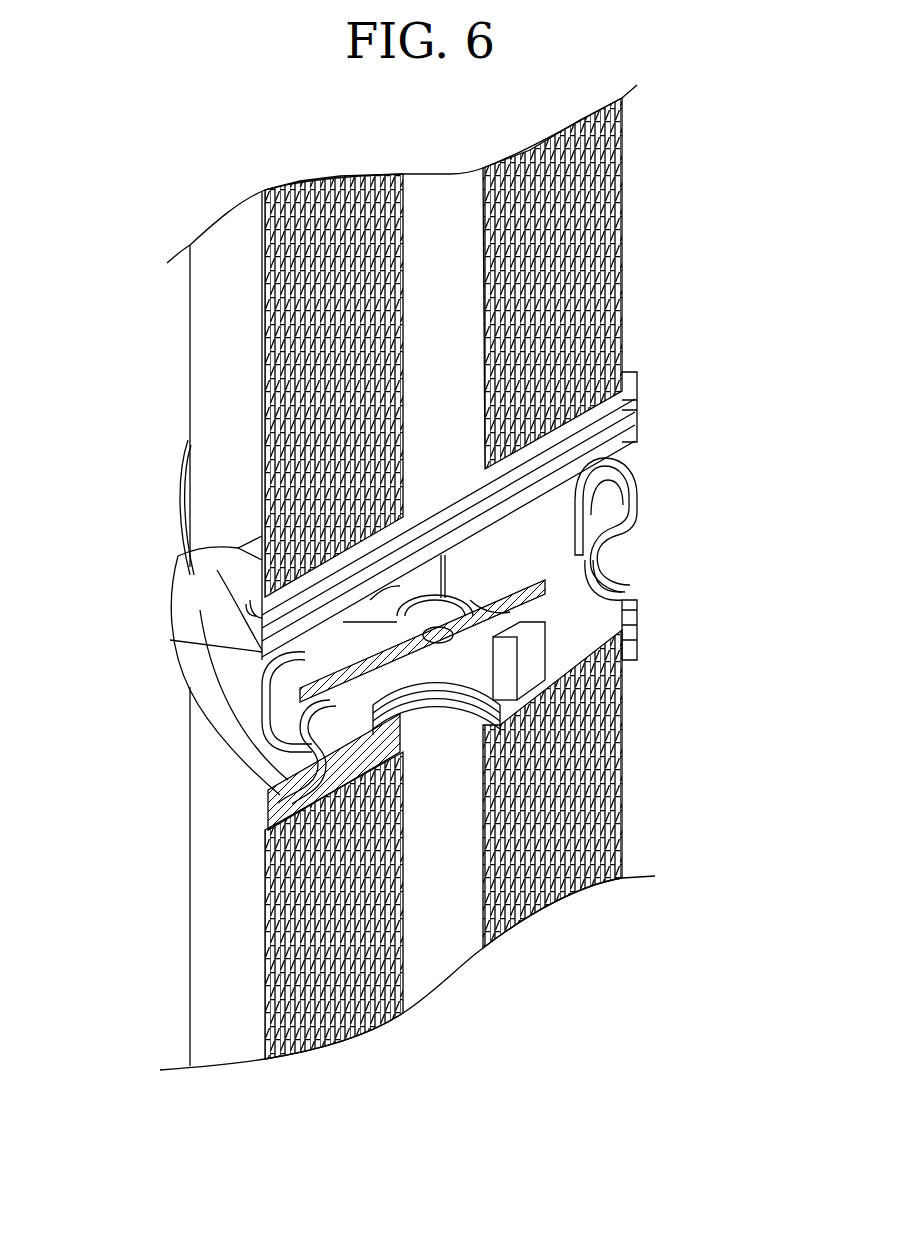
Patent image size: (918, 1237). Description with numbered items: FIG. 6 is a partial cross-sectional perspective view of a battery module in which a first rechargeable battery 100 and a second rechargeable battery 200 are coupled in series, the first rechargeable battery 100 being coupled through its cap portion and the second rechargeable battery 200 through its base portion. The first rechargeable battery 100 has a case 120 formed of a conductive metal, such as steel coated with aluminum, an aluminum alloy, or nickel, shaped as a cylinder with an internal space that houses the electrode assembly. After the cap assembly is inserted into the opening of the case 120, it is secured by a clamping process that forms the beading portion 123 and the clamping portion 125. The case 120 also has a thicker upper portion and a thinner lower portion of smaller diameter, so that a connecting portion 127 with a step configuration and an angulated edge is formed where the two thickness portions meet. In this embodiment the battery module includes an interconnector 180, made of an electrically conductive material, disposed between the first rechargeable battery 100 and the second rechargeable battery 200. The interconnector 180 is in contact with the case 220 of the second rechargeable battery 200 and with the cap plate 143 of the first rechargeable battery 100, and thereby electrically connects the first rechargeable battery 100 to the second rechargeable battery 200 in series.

The second rechargeable battery 200 is at (668, 196).
The case 220 is at (630, 299).
The clamping portion 125 is at (620, 495).
The connecting portion 127 is at (625, 520).
The beading portion 123 is at (600, 566).
The first rechargeable battery 100 is at (696, 873).
The case 120 is at (622, 800).
The interconnector 180 is at (210, 595).
The cap plate 143 is at (275, 698).